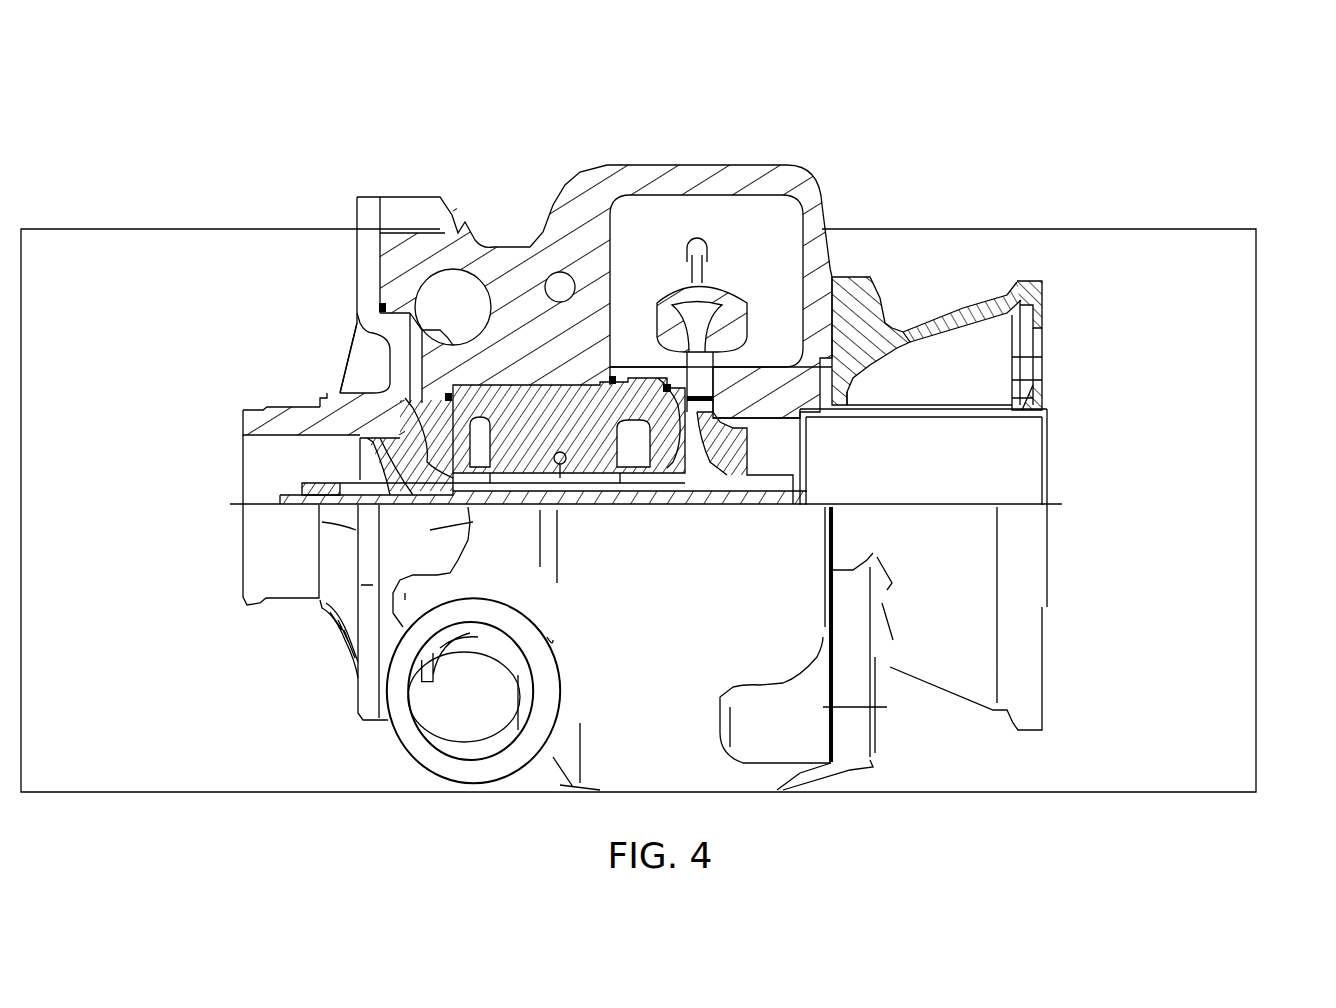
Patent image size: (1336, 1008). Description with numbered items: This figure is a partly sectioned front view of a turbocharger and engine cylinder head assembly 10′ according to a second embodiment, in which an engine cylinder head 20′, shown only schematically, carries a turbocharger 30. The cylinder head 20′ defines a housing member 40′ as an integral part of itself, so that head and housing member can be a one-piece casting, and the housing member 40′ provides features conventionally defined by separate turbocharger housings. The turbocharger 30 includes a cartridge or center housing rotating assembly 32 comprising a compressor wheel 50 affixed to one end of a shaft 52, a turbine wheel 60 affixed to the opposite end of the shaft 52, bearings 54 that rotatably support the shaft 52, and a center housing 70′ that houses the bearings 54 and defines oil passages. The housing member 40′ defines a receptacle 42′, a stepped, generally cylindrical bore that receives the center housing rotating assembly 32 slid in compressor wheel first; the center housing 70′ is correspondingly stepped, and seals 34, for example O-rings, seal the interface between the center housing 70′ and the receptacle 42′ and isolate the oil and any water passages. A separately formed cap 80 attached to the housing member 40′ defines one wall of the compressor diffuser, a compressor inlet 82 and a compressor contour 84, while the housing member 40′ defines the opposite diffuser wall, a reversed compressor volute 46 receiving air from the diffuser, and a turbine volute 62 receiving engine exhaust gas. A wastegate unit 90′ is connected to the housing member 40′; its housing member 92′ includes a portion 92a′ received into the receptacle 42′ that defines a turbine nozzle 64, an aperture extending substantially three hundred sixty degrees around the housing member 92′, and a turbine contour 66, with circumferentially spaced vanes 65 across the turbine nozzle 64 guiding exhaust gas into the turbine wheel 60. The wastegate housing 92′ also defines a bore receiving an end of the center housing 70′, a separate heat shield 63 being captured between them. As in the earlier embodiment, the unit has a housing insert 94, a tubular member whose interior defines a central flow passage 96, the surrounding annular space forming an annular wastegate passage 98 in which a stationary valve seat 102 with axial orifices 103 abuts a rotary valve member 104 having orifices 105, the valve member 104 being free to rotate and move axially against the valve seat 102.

The turbocharger and engine cylinder head assembly 10′ is at (1098, 202).
The engine cylinder head 20′ is at (1232, 335).
The turbocharger 30 is at (743, 150).
The center housing rotating assembly 32 is at (528, 524).
The seals 34 is at (613, 377).
The housing member 40′ is at (638, 177).
The receptacle 42′ is at (540, 385).
The compressor volute 46 is at (453, 305).
The compressor wheel 50 is at (370, 467).
The shaft 52 is at (349, 507).
The bearings 54 is at (597, 510).
The turbine wheel 60 is at (740, 480).
The turbine volute 62 is at (700, 363).
The heat shield 63 is at (687, 490).
The turbine nozzle 64 is at (712, 335).
The vanes 65 is at (703, 392).
The turbine contour 66 is at (747, 430).
The center housing 70′ is at (600, 478).
The cap 80 is at (295, 425).
The compressor inlet 82 is at (303, 438).
The compressor contour 84 is at (405, 428).
The wastegate unit 90′ is at (940, 298).
The wastegate housing member 92′ is at (985, 318).
The housing member portion 92a′ is at (814, 413).
The housing insert 94 is at (922, 415).
The central flow passage 96 is at (960, 427).
The annular flow passage 98 is at (877, 390).
The valve seat 102 is at (1043, 397).
The orifices 103 is at (1027, 378).
The rotary valve member 104 is at (987, 326).
The orifices 105 is at (1027, 338).